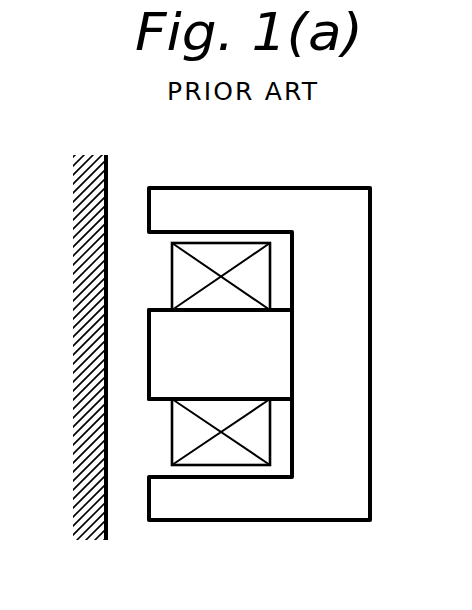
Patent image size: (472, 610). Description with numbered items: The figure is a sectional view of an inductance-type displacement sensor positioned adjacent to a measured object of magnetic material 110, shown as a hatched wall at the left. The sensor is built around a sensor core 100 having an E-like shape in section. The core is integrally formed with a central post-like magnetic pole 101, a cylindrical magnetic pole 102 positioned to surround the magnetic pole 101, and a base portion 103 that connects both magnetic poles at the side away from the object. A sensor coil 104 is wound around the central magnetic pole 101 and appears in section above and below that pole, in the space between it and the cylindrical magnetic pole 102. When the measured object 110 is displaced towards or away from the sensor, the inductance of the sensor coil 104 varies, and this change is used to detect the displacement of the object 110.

The sensor core 100 is at (378, 209).
The post-like magnetic pole 101 is at (149, 332).
The cylindrical magnetic pole 102 is at (208, 188).
The base portion 103 is at (349, 303).
The sensor coil 104 is at (271, 445).
The measured object of magnetic material 110 is at (108, 495).